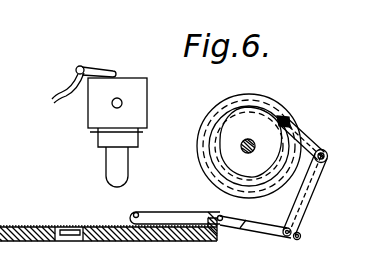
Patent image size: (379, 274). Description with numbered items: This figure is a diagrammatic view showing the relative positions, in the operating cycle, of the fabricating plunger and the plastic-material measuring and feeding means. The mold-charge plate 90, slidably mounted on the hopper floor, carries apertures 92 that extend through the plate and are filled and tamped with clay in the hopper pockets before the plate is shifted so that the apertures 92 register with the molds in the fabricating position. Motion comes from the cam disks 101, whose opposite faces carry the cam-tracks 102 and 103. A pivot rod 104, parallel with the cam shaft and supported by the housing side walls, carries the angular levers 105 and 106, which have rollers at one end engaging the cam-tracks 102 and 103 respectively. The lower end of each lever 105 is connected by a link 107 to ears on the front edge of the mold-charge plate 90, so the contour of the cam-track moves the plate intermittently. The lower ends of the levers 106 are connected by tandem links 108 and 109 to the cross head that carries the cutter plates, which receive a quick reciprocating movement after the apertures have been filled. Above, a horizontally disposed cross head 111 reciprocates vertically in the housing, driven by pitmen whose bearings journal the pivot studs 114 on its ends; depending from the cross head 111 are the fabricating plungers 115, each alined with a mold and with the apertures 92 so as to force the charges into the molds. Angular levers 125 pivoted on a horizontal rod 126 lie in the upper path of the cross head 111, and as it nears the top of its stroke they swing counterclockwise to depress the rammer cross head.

The mold-charge plate 90 is at (170, 238).
The apertures 92 is at (83, 237).
The cam disks 101 is at (278, 86).
The cam-track 102 is at (220, 128).
The cam-track 103 is at (210, 175).
The pivot rod 104 is at (328, 153).
The angular levers 105 is at (293, 128).
The angular levers 106 is at (303, 137).
The link 107 is at (273, 233).
The tandem link 108 is at (244, 212).
The tandem link 109 is at (196, 218).
The cross head 111 is at (135, 97).
The pivot studs 114 is at (112, 104).
The fabricating plungers 115 is at (120, 174).
The angular levers 125 is at (112, 72).
The horizontal rod 126 is at (82, 67).